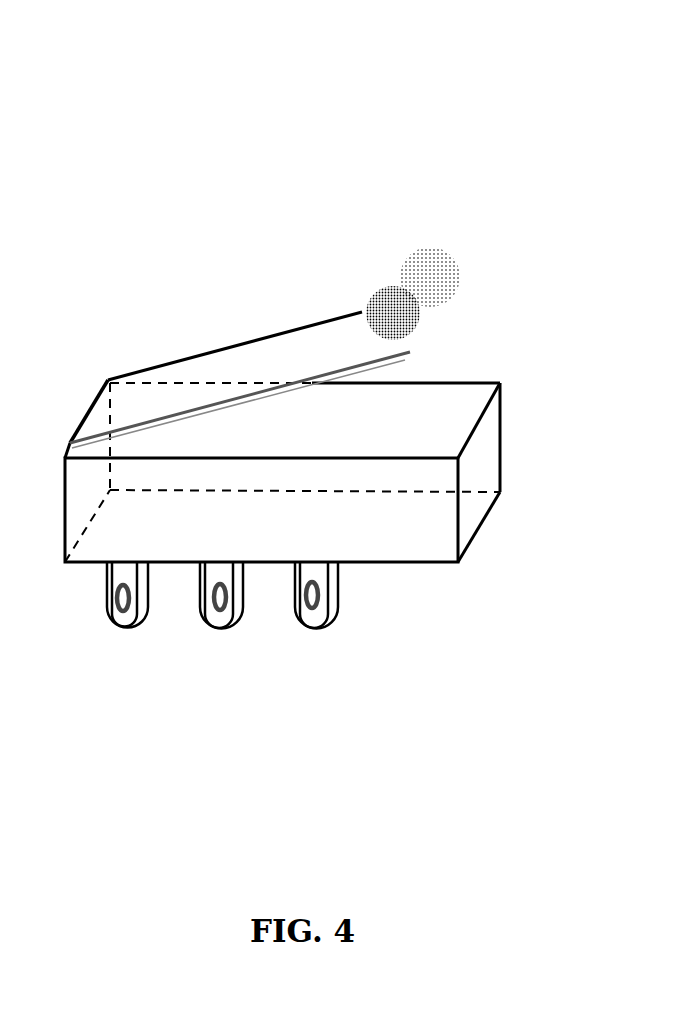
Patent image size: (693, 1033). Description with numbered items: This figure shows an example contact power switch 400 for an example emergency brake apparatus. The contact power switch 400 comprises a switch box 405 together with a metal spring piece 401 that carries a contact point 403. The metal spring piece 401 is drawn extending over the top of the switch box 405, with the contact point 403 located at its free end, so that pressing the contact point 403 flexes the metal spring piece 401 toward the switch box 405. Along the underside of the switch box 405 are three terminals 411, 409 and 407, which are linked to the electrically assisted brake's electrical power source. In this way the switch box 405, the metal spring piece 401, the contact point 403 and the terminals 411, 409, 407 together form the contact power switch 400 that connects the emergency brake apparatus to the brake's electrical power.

The contact power switch 400 is at (434, 100).
The metal spring piece 401 is at (237, 370).
The contact point 403 is at (432, 288).
The switch box 405 is at (408, 510).
The terminal 407 is at (318, 623).
The terminal 409 is at (223, 623).
The terminal 411 is at (125, 623).